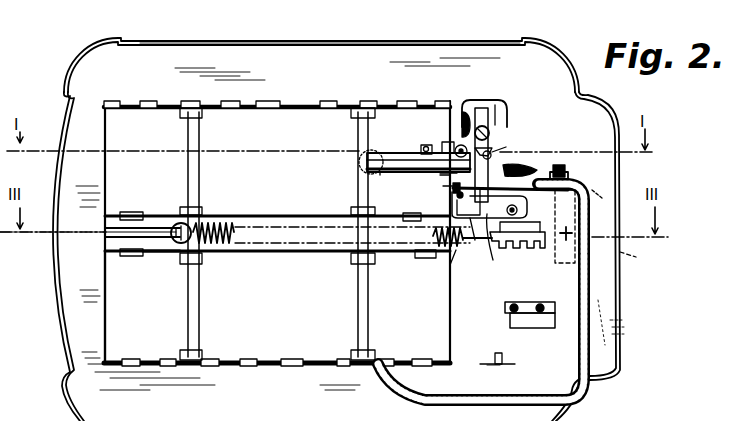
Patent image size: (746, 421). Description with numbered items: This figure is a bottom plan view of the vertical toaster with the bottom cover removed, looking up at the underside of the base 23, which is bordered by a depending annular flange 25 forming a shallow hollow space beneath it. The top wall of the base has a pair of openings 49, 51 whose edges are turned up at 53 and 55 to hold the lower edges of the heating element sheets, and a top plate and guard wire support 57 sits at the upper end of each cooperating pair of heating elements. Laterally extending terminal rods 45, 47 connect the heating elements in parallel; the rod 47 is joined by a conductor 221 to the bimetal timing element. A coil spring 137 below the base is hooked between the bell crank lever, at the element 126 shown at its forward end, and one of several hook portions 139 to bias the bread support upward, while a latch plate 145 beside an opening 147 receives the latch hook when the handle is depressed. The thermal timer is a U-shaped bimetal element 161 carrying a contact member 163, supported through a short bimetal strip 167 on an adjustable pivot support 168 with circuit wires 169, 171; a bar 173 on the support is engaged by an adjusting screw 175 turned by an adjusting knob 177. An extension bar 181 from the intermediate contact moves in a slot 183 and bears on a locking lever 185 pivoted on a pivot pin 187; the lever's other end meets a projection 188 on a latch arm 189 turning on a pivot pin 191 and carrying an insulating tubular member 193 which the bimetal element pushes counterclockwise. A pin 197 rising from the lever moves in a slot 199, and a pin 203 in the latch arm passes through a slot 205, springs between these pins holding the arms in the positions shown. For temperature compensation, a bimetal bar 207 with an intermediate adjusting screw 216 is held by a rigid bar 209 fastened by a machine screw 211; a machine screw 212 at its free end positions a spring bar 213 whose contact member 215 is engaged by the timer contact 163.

The base 23 is at (298, 40).
The depending annular flange 25 is at (60, 335).
The terminal rod 45 is at (195, 313).
The terminal rod 47 is at (362, 305).
The opening 49 is at (106, 168).
The opening 51 is at (108, 310).
The turned-up edge portion 53 is at (137, 118).
The turned-up edge portion 55 is at (177, 254).
The top plate and guard wire support 57 is at (388, 260).
The ball joint 126 is at (168, 228).
The coil spring 137 is at (228, 232).
The hook portions 139 is at (515, 249).
The latch plate 145 is at (550, 308).
The opening 147 is at (527, 322).
The bimetal element 161 is at (484, 198).
The contact member 163 is at (436, 190).
The bimetal strip 167 is at (522, 222).
The adjustable pivot support 168 is at (562, 168).
The circuit wire 169 is at (530, 178).
The circuit wire 171 is at (569, 185).
The bar 173 is at (604, 196).
The adjusting screw 175 is at (561, 231).
The adjusting knob 177 is at (643, 261).
The extension bar 181 is at (508, 103).
The slot 183 is at (478, 103).
The locking lever 185 is at (490, 146).
The pivot pin 187 is at (490, 132).
The projection 188 is at (520, 226).
The latch arm 189 is at (462, 250).
The pivot pin 191 is at (538, 226).
The tubular member 193 is at (450, 200).
The pin 197 is at (492, 157).
The slot 199 is at (505, 150).
The pin 203 is at (482, 244).
The slot 205 is at (495, 262).
The bimetal bar 207 is at (393, 155).
The rigid bar 209 is at (394, 175).
The machine screw 211 is at (450, 104).
The machine screw 212 is at (447, 142).
The spring bar 213 is at (432, 173).
The contact member 215 is at (443, 185).
The intermediate adjusting screw 216 is at (425, 145).
The conductor 221 is at (578, 346).